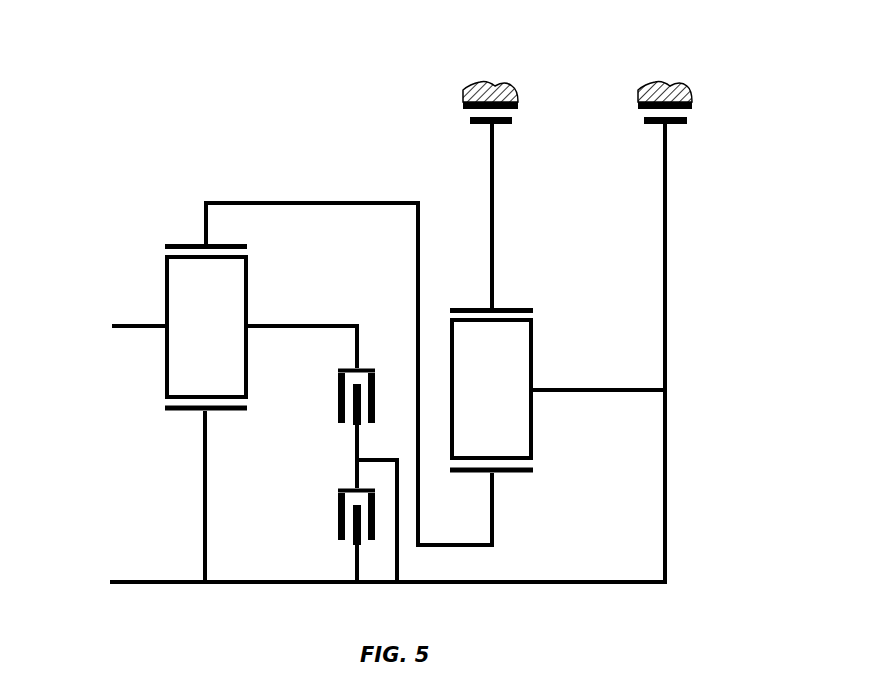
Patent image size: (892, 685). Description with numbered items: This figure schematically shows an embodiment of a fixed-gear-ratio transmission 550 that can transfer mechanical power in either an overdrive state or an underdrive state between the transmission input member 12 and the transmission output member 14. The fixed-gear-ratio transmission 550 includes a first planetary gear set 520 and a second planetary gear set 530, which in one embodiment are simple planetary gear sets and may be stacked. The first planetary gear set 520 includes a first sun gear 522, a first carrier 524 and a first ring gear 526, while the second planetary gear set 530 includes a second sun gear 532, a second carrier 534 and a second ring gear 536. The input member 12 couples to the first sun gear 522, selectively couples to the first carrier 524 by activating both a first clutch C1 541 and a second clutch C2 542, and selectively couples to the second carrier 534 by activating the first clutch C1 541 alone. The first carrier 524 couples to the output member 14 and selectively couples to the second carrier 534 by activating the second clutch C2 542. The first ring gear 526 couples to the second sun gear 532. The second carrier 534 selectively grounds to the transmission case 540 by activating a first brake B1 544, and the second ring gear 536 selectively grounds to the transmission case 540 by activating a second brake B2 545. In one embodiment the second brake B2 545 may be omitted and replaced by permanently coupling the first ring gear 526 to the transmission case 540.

The fixed-gear-ratio transmission 550 is at (262, 105).
The transmission output member 14 is at (106, 339).
The transmission input member 12 is at (106, 592).
The first carrier 524 is at (228, 337).
The first ring gear 526 is at (178, 243).
The first sun gear 522 is at (222, 412).
The first planetary gear set 520 is at (224, 236).
The second clutch C2 542 is at (338, 402).
The first clutch C1 541 is at (338, 520).
The second carrier 534 is at (513, 401).
The second ring gear 536 is at (475, 308).
The second planetary gear set 530 is at (509, 300).
The second sun gear 532 is at (505, 474).
The second brake B2 545 is at (505, 115).
The first brake B1 544 is at (680, 115).
The transmission case 540 is at (650, 83).